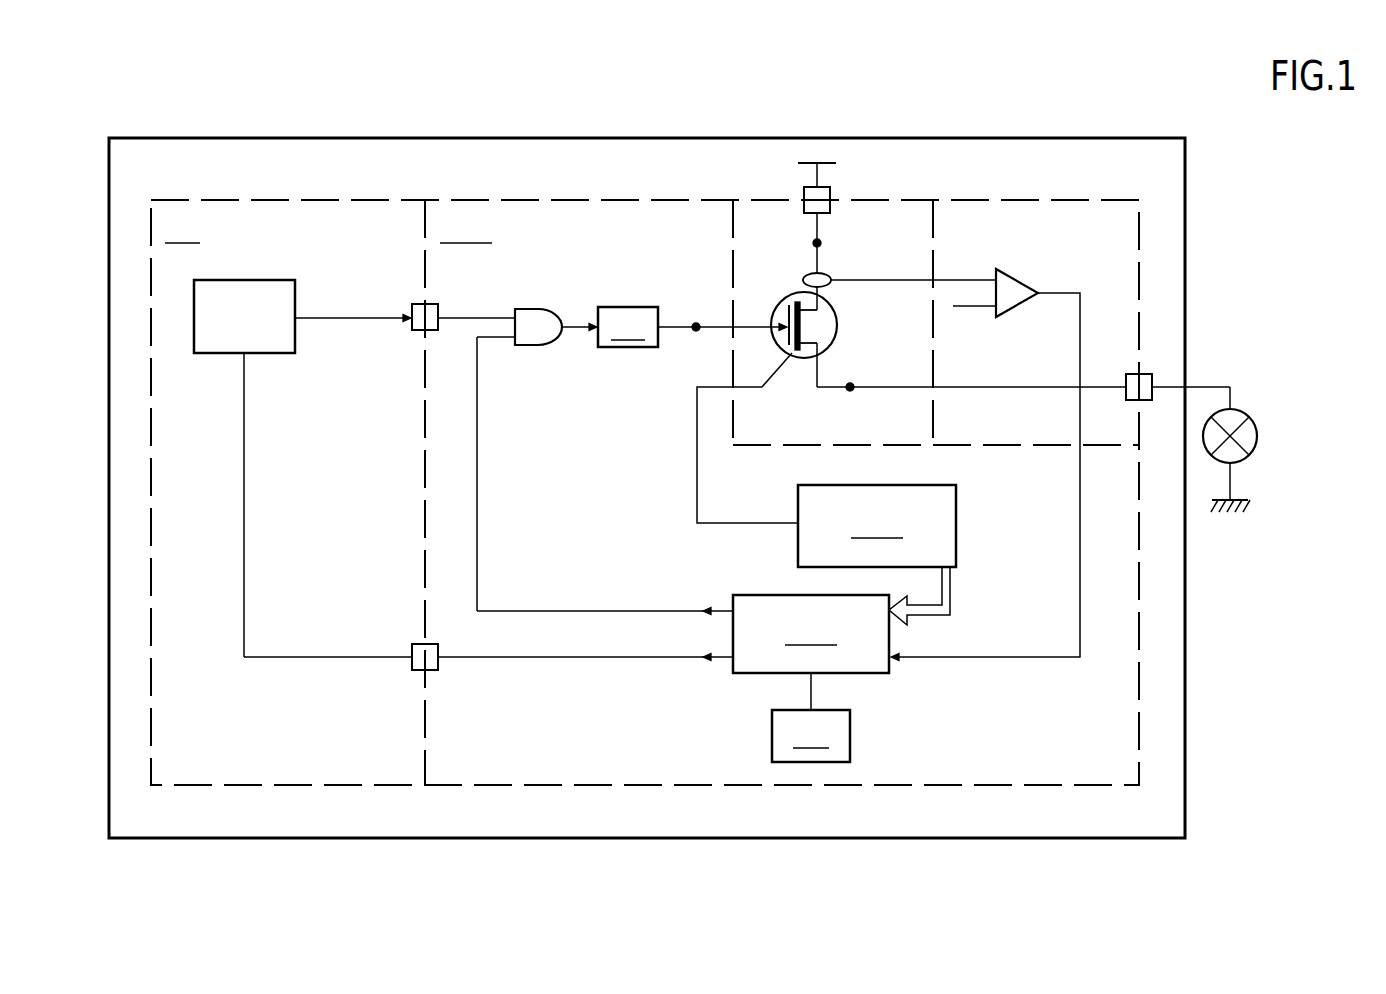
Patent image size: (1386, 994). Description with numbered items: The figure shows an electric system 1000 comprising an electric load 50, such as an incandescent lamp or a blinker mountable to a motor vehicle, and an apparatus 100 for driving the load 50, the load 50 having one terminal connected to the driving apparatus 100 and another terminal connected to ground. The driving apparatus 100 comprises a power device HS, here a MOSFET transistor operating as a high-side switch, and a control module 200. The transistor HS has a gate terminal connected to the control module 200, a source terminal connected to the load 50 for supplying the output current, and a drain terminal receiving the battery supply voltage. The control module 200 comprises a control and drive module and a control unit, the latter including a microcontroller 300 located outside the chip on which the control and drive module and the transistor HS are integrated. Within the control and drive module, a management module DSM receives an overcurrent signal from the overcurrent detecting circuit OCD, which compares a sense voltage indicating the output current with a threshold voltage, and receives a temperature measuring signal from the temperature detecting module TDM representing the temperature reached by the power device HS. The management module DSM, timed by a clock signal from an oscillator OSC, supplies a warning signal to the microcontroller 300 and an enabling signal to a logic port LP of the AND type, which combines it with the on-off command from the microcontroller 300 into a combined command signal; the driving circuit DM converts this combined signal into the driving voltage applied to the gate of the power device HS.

The electric system 1000 is at (638, 90).
The apparatus for driving the load 100 is at (203, 126).
The control module 200 is at (1156, 257).
The microcontroller 300 is at (264, 330).
The electric load 50 is at (1253, 426).
The logic port LP is at (526, 308).
The driving circuit DM is at (628, 327).
The power device HS is at (838, 312).
The overcurrent detecting circuit OCD is at (1014, 271).
The temperature detecting module TDM is at (877, 526).
The management module DSM is at (811, 634).
The oscillator OSC is at (811, 717).